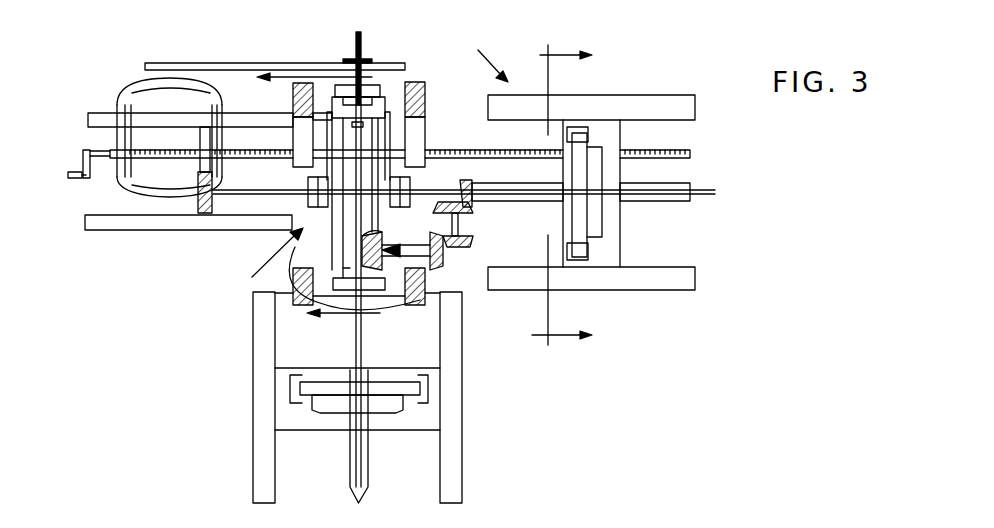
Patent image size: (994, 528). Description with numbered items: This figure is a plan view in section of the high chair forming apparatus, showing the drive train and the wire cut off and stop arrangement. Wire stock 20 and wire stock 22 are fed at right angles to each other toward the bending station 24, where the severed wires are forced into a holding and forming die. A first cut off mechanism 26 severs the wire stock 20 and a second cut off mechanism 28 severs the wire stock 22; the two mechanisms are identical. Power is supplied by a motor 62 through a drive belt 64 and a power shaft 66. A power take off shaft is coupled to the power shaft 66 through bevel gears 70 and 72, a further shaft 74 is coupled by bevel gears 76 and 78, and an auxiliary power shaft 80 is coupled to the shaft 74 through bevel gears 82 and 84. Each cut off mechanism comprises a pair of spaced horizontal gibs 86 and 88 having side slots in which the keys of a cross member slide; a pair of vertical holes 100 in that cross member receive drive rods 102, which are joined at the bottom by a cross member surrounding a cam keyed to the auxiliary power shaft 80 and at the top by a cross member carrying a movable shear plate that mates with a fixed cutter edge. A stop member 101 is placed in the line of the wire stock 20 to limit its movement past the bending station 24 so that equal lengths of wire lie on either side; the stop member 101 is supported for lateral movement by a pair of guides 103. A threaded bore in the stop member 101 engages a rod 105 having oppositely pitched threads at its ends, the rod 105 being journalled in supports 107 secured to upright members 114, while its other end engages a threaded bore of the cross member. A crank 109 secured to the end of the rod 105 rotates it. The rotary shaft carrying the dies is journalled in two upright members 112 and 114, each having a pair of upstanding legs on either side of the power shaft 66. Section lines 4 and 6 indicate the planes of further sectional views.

The section line 4- 4 is at (562, 199).
The section line 6- 6 is at (318, 211).
The wire stock 20 is at (700, 192).
The wire stock 22 is at (360, 345).
The bending station 24 is at (262, 261).
The first cut off mechanism 26 is at (486, 55).
The second cut off mechanism 28 is at (387, 412).
The motor 62 is at (141, 95).
The drive belt 64 is at (222, 63).
The power shaft 66 is at (372, 357).
The bevel gear 70 is at (420, 292).
The bevel gear 72 is at (437, 268).
The shaft 74 is at (459, 222).
The bevel gear 76 is at (445, 256).
The bevel gear 78 is at (463, 243).
The auxiliary power shaft 80 is at (511, 190).
The bevel gear 82 is at (455, 202).
The bevel gear 84 is at (471, 192).
The horizontal gib 86 is at (665, 107).
The horizontal gib 88 is at (638, 277).
The vertical holes 100 is at (580, 130).
The stop member 101 is at (215, 208).
The drive rods 102 is at (582, 170).
The guides 103 is at (107, 117).
The rod 105 is at (481, 150).
The supports 107 is at (415, 145).
The crank 109 is at (73, 180).
The upright member 112 is at (357, 276).
The upright member 114 is at (417, 80).